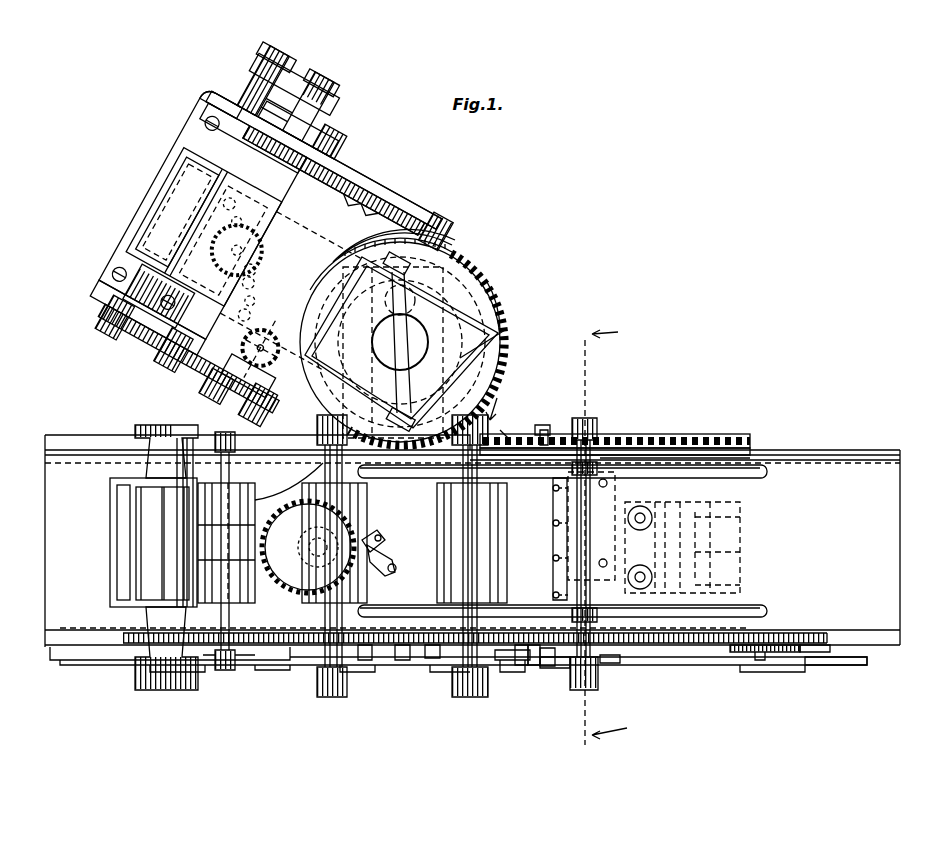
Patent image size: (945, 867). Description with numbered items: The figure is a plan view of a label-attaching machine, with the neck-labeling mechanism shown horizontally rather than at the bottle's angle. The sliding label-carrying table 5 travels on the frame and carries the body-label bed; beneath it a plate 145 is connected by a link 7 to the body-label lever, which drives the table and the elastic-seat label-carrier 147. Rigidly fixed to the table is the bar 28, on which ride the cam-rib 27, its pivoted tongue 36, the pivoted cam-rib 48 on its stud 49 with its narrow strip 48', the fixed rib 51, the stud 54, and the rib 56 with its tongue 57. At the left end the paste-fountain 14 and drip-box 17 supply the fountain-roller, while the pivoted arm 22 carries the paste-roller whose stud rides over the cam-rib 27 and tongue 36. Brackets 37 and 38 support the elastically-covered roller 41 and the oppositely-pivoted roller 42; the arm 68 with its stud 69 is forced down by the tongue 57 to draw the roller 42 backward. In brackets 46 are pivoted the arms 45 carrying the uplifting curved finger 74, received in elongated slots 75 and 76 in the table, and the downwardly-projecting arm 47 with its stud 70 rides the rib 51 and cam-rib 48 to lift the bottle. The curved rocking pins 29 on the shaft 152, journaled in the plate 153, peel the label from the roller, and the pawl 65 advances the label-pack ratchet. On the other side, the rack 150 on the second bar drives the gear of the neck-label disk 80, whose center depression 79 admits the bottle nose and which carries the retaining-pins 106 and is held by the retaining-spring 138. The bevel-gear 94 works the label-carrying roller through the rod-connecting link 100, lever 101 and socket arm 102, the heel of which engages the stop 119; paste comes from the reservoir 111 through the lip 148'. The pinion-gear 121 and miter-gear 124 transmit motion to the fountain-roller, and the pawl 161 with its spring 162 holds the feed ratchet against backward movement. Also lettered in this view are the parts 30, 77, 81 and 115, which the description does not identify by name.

The label-carrying table 5 is at (47, 558).
The link 7 is at (700, 522).
The paste-fountain 14 is at (136, 606).
The drip-box 17 is at (112, 612).
The pivoted arm 22 is at (219, 671).
The cam-rib 27 is at (366, 661).
The bar 28 is at (58, 641).
The curved rocking pins 29 is at (543, 433).
The guide bar 30 is at (596, 440).
The tongue 36 is at (400, 661).
The bracket 37 is at (350, 686).
The bracket 38 is at (456, 688).
The elastically-covered roller 41 is at (308, 596).
The pivoted roller 42 is at (455, 620).
The arm 45 is at (536, 664).
The bracket 46 is at (591, 440).
The downwardly-projecting arm 47 is at (549, 664).
The cam-rib 48 is at (596, 706).
The narrow strip 48' is at (426, 669).
The stud 49 is at (767, 660).
The rib 51 is at (62, 658).
The stud 54 is at (735, 653).
The rib 56 is at (815, 666).
The tongue 57 is at (758, 653).
The pawl 65 is at (308, 547).
The arm 68 is at (505, 662).
The stud 69 is at (520, 663).
The stud 70 is at (540, 668).
The uplifting curved finger 74 is at (506, 433).
The elongated slot 75 is at (400, 618).
The elongated slot 76 is at (668, 468).
The roller 77 is at (329, 600).
The depression 79 is at (400, 342).
The neck-label disk 80 is at (503, 356).
The nut 81 is at (458, 228).
The bevel-gear 94 is at (473, 283).
The rod-connecting link 100 is at (426, 216).
The lever 101 is at (326, 135).
The socket arm 102 is at (292, 68).
The retaining-pins 106 is at (481, 305).
The reservoir 111 is at (160, 212).
The rack 115 is at (372, 192).
The stop 119 is at (218, 98).
The pinion-gear 121 is at (206, 356).
The miter-gear 124 is at (216, 376).
The retaining-spring 138 is at (448, 264).
The plate 145 is at (641, 589).
The elastic-seat label-carrier 147 is at (543, 424).
The lip 148' is at (205, 223).
The rack 150 is at (735, 440).
The shaft 152 is at (562, 420).
The plate 153 is at (612, 455).
The pawl 161 is at (262, 292).
The spring 162 is at (262, 306).